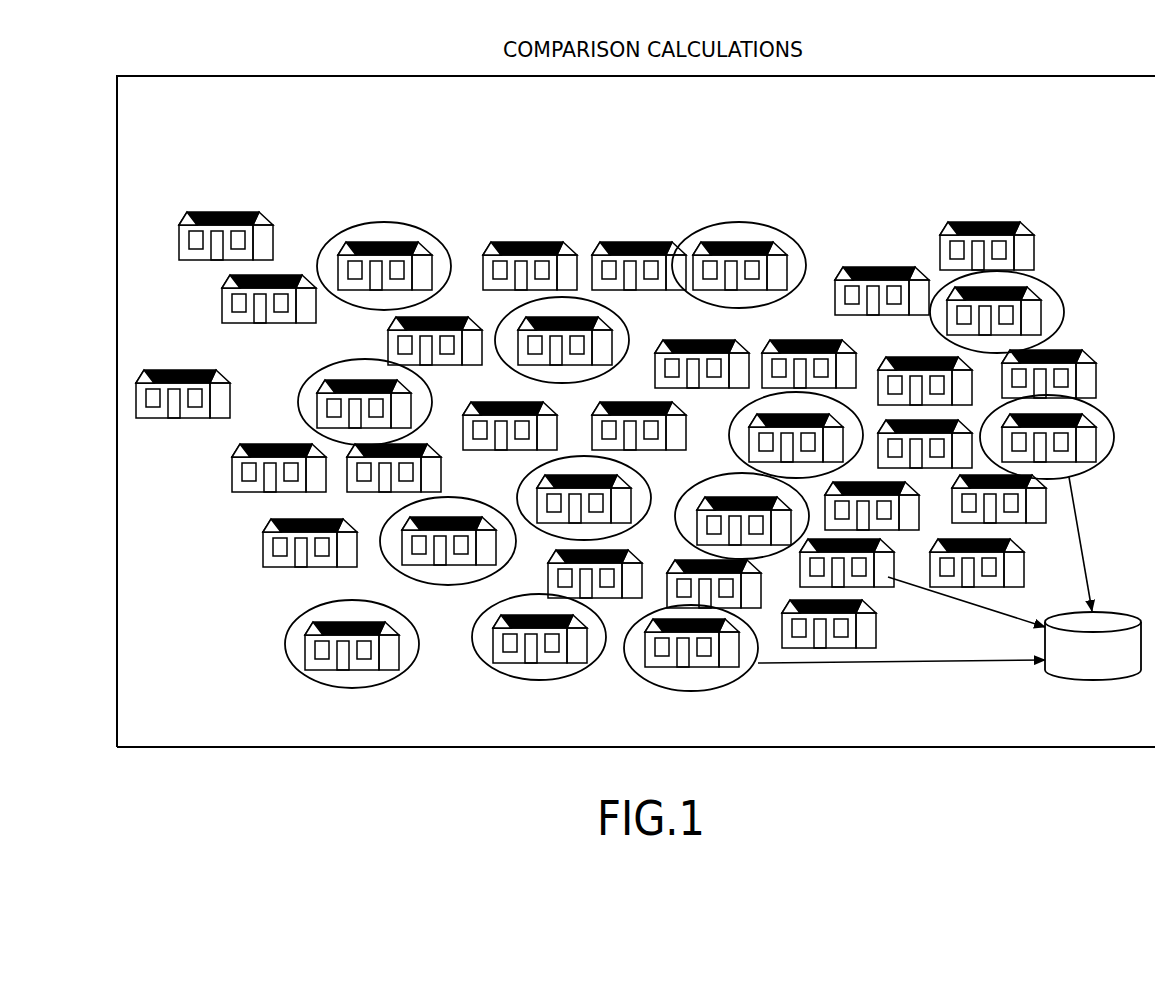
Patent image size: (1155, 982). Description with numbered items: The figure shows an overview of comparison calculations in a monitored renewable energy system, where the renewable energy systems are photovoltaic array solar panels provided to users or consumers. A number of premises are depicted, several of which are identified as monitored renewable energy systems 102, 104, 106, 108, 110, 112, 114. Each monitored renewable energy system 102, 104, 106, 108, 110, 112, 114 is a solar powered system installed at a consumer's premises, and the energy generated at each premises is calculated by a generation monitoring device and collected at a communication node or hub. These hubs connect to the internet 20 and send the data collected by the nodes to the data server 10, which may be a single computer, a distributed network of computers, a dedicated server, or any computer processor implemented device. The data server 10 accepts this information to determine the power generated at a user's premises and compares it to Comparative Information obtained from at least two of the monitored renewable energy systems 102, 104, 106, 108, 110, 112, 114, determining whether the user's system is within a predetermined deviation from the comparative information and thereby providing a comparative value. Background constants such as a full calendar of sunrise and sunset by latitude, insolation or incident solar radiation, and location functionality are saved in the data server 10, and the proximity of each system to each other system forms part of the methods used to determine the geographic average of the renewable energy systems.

The monitored renewable energy system 102 is at (648, 480).
The monitored renewable energy system 104 is at (585, 297).
The monitored renewable energy system 106 is at (788, 228).
The monitored renewable energy system 108 is at (860, 413).
The monitored renewable energy system 110 is at (1064, 307).
The monitored renewable energy system 112 is at (328, 362).
The monitored renewable energy system 114 is at (393, 222).
The data server 10 is at (1127, 612).
The internet 20 is at (997, 662).